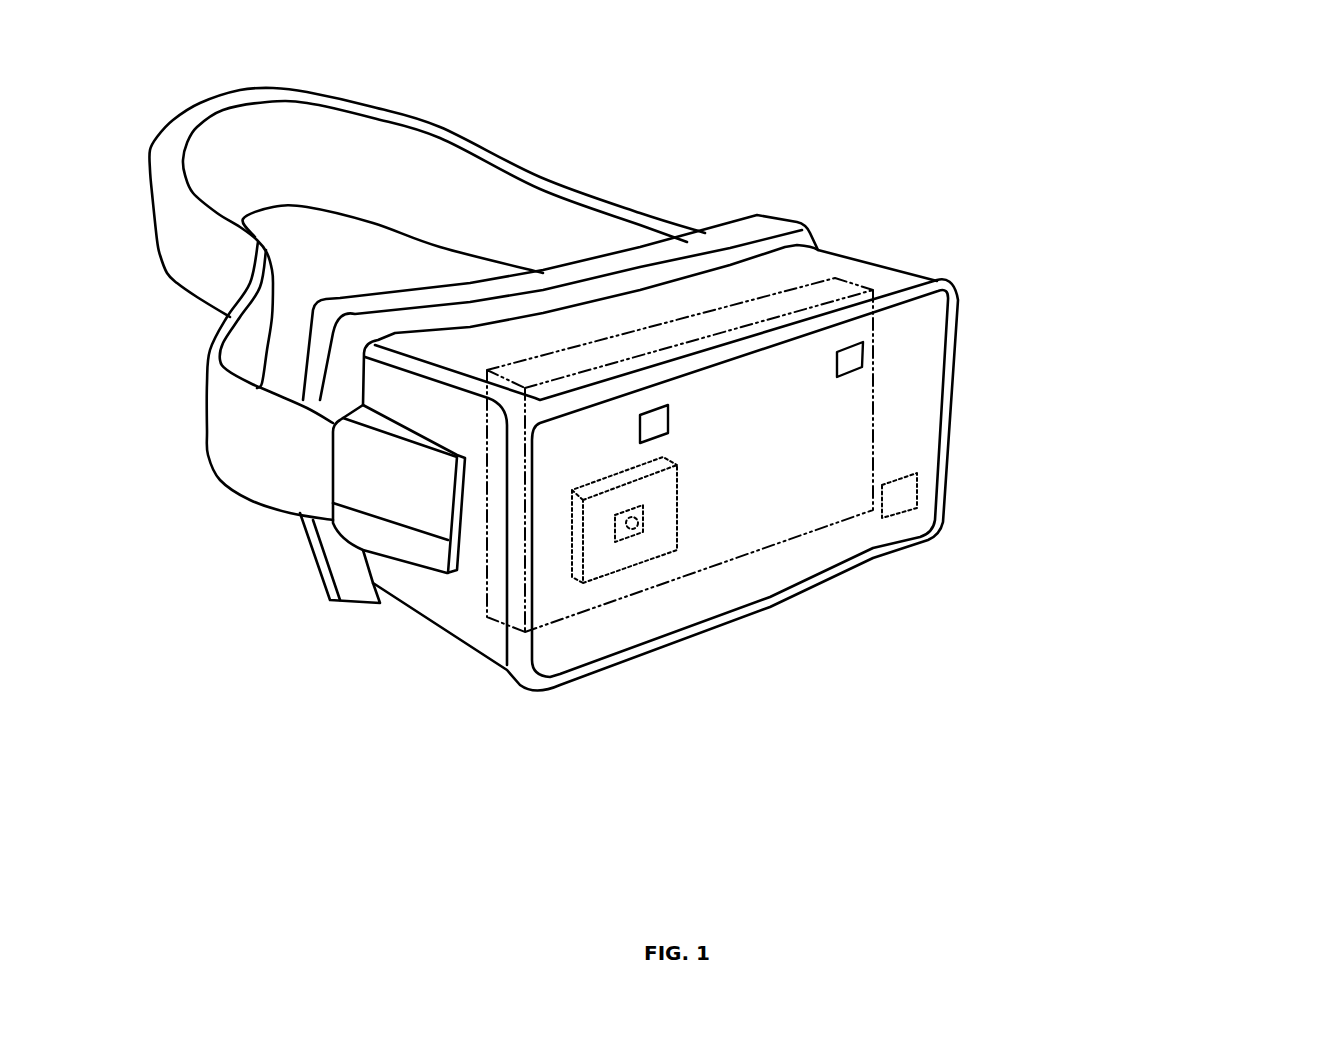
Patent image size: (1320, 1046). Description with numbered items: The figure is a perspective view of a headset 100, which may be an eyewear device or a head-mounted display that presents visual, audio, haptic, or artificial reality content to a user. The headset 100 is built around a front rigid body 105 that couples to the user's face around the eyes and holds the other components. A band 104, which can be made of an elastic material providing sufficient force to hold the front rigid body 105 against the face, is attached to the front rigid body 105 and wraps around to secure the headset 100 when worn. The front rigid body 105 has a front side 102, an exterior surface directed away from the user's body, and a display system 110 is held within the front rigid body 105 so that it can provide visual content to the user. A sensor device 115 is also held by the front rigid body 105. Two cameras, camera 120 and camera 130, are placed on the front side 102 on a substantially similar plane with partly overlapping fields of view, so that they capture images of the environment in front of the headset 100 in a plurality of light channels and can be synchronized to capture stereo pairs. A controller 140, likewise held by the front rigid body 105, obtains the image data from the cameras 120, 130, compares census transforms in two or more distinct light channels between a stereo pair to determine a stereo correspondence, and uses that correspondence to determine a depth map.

The headset 100 is at (1256, 64).
The front side 102 is at (908, 460).
The band 104 is at (560, 170).
The front rigid body 105 is at (794, 434).
The display system 110 is at (830, 292).
The sensor device 115 is at (632, 527).
The camera 120 is at (866, 358).
The camera 130 is at (640, 424).
The controller 140 is at (905, 512).